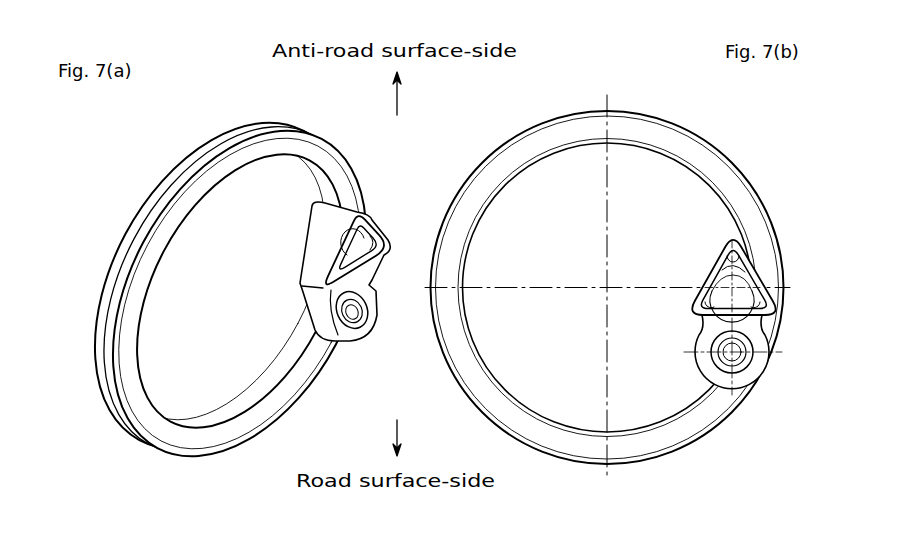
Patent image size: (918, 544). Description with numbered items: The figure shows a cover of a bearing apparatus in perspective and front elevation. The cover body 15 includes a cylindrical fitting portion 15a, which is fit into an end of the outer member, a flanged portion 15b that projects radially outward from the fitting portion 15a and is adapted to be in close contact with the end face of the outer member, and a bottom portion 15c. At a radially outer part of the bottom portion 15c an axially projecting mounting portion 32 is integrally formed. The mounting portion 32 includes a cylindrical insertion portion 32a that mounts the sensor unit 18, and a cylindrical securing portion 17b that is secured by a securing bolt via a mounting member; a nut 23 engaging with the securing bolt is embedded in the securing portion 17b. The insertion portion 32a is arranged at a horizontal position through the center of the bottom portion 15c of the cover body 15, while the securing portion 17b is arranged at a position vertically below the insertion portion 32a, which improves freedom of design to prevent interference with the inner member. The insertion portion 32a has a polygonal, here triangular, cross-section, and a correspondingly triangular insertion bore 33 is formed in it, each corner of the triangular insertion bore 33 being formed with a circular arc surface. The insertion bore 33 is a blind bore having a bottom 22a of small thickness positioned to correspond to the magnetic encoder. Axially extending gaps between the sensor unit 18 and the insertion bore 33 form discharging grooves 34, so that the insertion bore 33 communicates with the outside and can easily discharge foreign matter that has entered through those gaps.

In FIG. 7A, the cover body 15 is at (234, 131).
In FIG. 7B, the cover body 15 is at (705, 132).
In FIG. 7A, the cylindrical fitting portion 15a is at (203, 157).
In FIG. 7A, the flanged portion 15b is at (288, 130).
In FIG. 7B, the flanged portion 15b is at (507, 155).
In FIG. 7A, the bottom portion 15c is at (228, 398).
In FIG. 7B, the bottom portion 15c is at (565, 402).
In FIG. 7A, the cylindrical securing portion 17b is at (307, 312).
In FIG. 7B, the cylindrical securing portion 17b is at (705, 363).
In FIG. 7B, the sensor unit 18 is at (780, 270).
In FIG. 7B, the bottom 22a is at (720, 268).
In FIG. 7A, the nut 23 is at (348, 332).
In FIG. 7B, the nut 23 is at (745, 365).
In FIG. 7A, the mounting portion 32 is at (375, 218).
In FIG. 7B, the mounting portion 32 is at (758, 260).
In FIG. 7A, the cylindrical insertion portion 32a is at (320, 246).
In FIG. 7B, the cylindrical insertion portion 32a is at (702, 277).
In FIG. 7A, the insertion bore 33 is at (370, 247).
In FIG. 7B, the insertion bore 33 is at (708, 291).
In FIG. 7A, the discharging grooves 34 is at (378, 244).
In FIG. 7B, the discharging grooves 34 is at (720, 243).